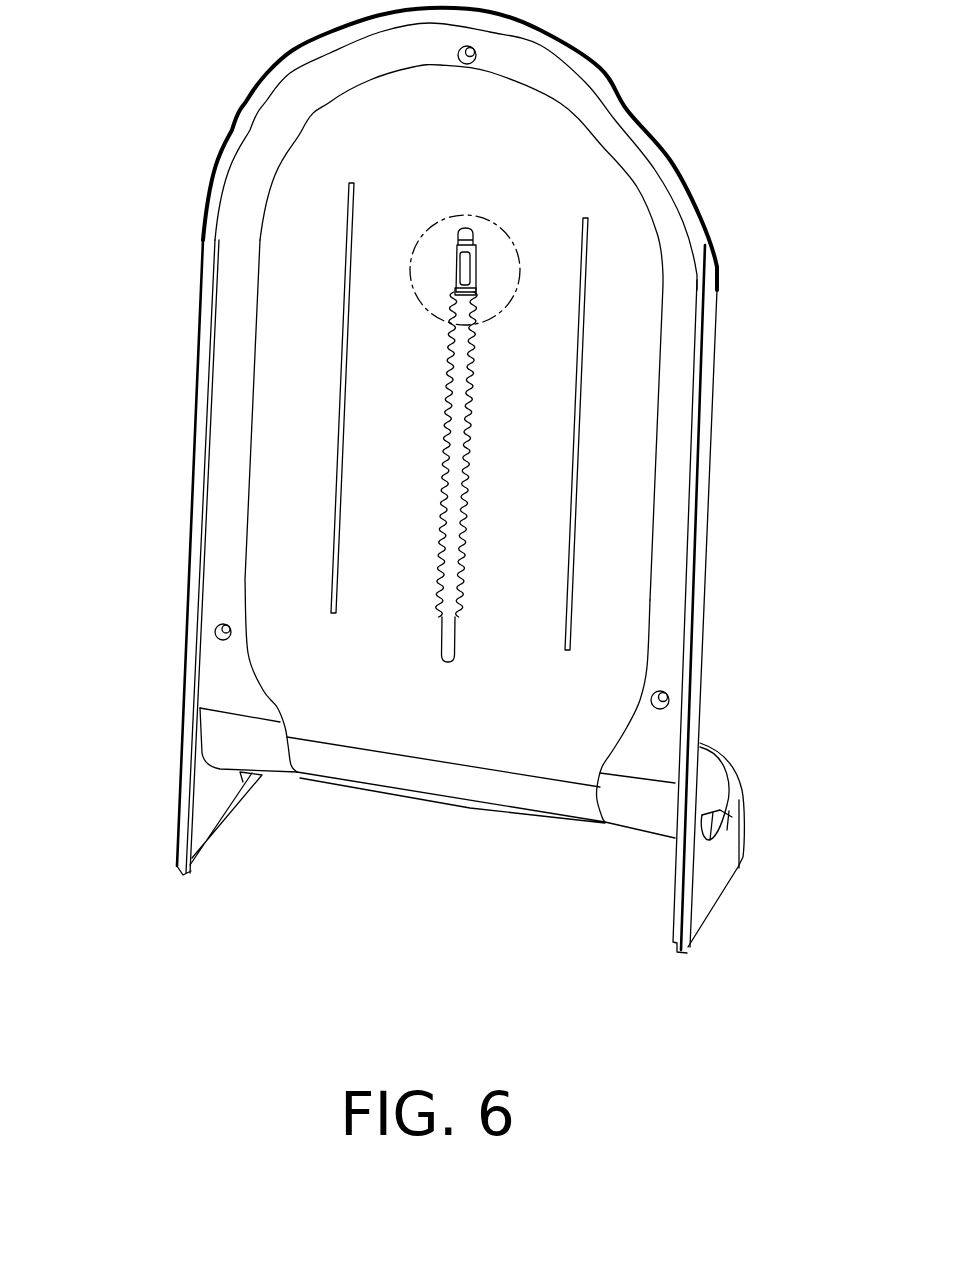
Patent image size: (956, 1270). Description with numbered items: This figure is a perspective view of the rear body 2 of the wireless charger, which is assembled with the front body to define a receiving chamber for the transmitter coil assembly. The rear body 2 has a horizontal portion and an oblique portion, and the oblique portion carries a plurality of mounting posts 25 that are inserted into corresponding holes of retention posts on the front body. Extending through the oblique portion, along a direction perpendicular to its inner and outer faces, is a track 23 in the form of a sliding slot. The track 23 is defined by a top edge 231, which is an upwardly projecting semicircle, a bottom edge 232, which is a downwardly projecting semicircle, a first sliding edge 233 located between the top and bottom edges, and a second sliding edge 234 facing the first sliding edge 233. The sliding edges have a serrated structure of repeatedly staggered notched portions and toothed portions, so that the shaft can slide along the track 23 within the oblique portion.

The rear body 2 is at (203, 82).
The track 23 is at (438, 489).
The top edge 231 is at (473, 227).
The bottom edge 232 is at (448, 662).
The first sliding edge 233 is at (460, 390).
The second sliding edge 234 is at (473, 415).
The mounting post 25 is at (214, 636).